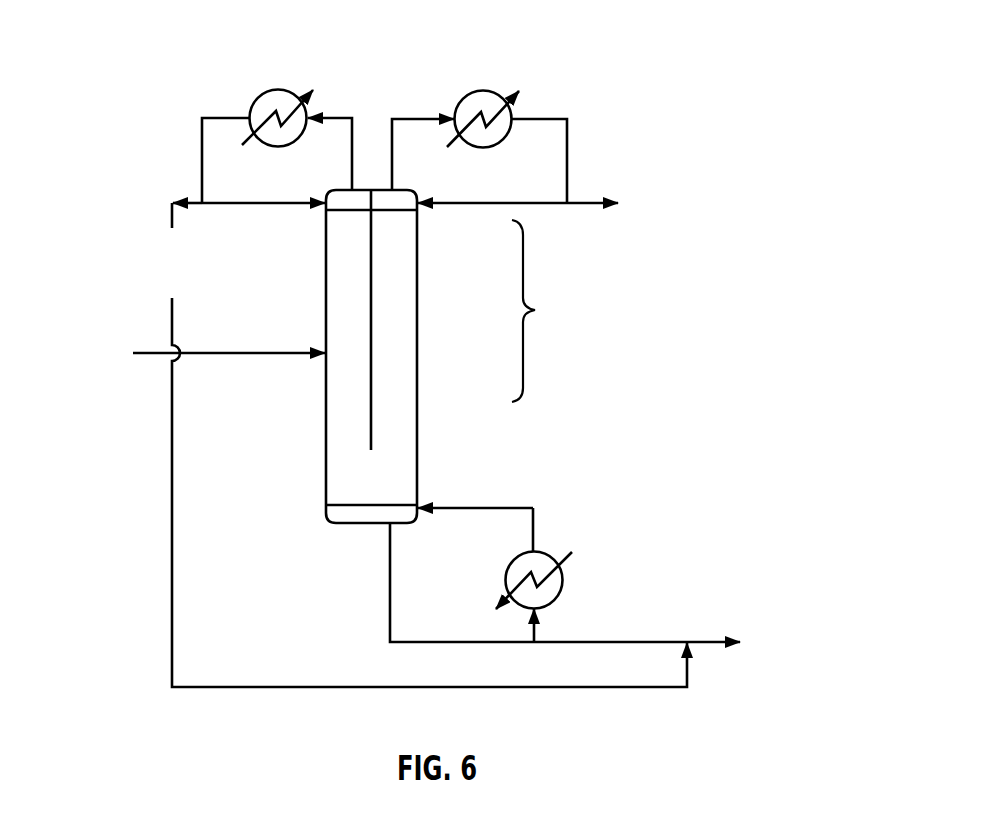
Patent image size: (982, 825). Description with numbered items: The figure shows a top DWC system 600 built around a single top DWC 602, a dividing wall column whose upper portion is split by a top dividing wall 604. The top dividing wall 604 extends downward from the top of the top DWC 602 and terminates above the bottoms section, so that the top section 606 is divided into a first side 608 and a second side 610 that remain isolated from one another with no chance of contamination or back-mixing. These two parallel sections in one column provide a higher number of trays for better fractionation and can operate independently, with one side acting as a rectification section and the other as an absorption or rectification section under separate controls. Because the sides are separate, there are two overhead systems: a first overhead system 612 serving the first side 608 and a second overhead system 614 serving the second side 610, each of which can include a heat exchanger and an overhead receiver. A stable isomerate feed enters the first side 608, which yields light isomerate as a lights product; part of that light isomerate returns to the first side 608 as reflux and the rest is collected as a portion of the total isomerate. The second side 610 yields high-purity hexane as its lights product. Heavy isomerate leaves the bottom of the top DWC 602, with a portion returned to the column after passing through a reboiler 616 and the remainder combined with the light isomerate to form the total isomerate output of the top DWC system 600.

The top DWC system 600 is at (178, 64).
The top DWC 602 is at (384, 356).
The top dividing wall 604 is at (370, 412).
The top section 606 is at (549, 311).
The first side 608 is at (340, 278).
The second side 610 is at (402, 278).
The first overhead system 612 is at (256, 102).
The second overhead system 614 is at (468, 92).
The reboiler 616 is at (508, 565).